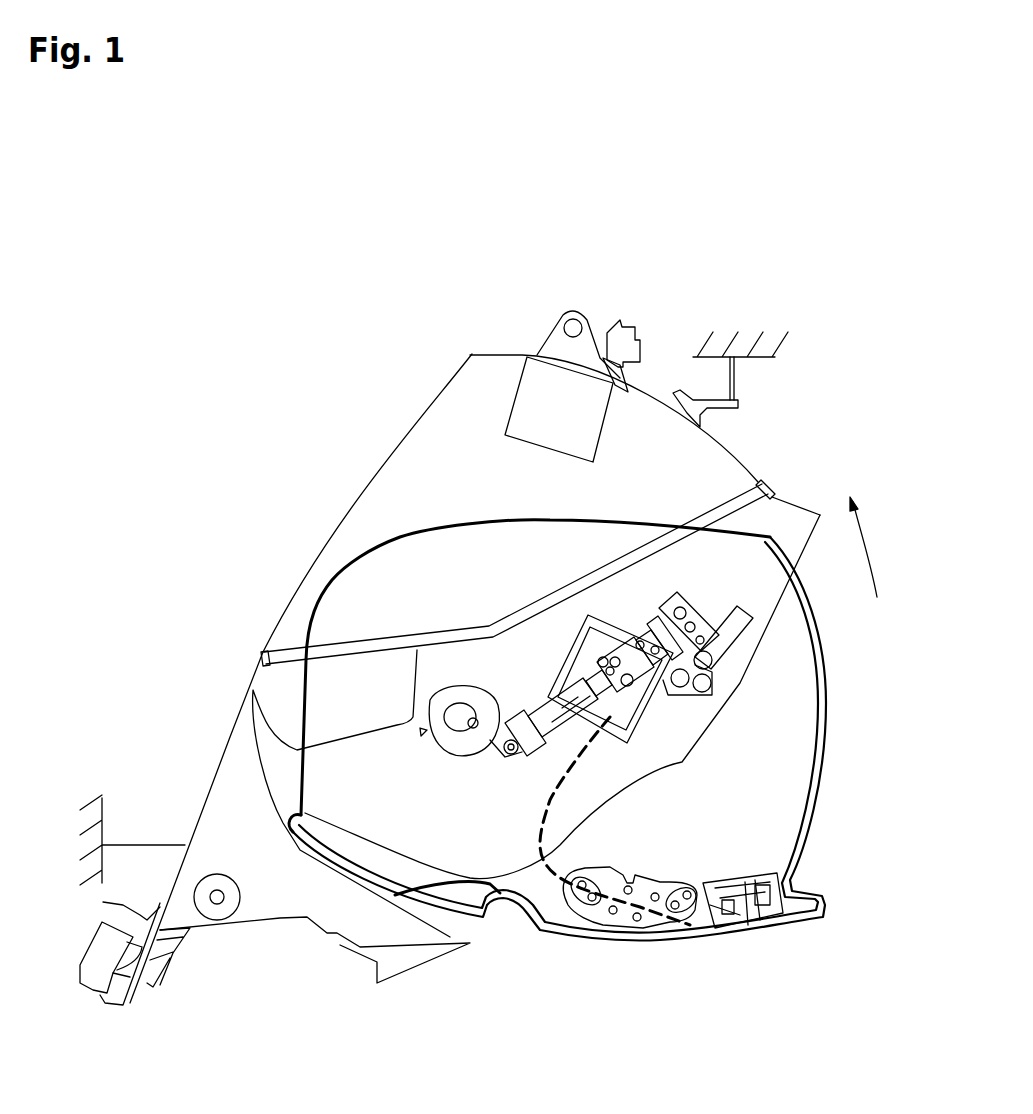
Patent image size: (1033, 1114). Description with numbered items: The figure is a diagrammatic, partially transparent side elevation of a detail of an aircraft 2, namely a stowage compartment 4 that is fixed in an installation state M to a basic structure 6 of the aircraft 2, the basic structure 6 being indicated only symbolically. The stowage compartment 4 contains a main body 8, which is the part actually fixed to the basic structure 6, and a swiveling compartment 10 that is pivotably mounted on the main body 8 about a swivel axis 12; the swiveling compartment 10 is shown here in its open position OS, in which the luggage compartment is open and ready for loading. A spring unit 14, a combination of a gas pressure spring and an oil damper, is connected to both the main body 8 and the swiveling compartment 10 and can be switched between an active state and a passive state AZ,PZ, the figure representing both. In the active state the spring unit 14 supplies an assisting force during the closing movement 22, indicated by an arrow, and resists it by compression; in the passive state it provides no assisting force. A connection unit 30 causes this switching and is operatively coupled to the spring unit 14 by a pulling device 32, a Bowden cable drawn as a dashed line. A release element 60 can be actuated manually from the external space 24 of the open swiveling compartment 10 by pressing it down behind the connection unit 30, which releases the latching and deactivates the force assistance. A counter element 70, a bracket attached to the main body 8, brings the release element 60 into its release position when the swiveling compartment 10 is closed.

The aircraft 2 is at (768, 157).
The installation state M is at (760, 260).
The stowage compartment 4 is at (263, 362).
The basic structure 6 is at (750, 355).
The main body 8 is at (745, 462).
The spring unit 14 is at (590, 640).
The closing movement 22 is at (863, 532).
The counter element 70 is at (720, 642).
The active state and passive state AZ,PZ is at (652, 714).
The swiveling compartment 10 is at (826, 783).
The external space 24 is at (933, 857).
The swivel axis 12 is at (473, 723).
The pulling device 32 is at (540, 893).
The release element 60 is at (700, 917).
The connection unit 30 is at (763, 923).
The open position OS is at (832, 960).